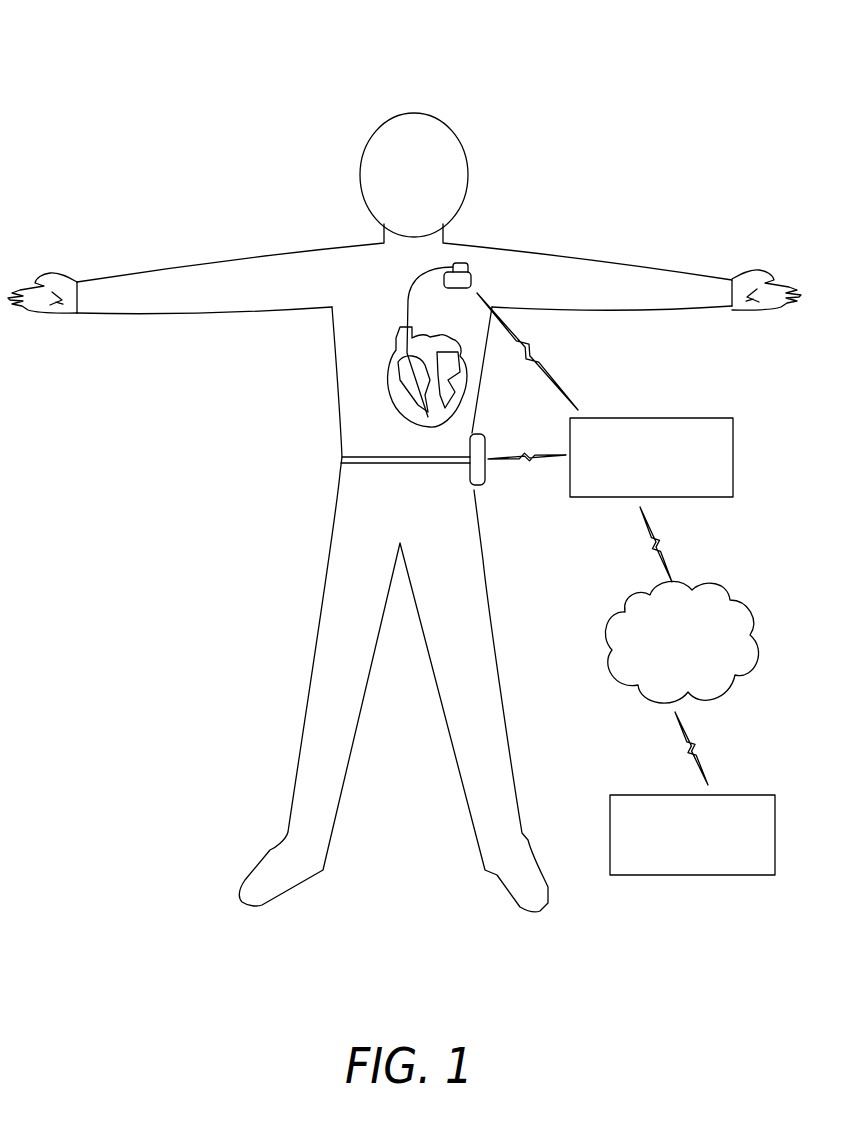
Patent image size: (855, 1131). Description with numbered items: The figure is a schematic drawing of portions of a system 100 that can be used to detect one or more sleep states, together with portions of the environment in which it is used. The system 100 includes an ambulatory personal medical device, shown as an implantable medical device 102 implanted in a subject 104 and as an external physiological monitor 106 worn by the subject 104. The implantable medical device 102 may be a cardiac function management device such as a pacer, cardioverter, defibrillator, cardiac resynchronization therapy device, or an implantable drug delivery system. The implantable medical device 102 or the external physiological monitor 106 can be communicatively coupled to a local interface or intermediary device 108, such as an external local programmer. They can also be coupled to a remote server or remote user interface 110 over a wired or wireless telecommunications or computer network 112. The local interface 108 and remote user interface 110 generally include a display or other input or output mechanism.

The system 100 is at (156, 56).
The implantable medical device 102 is at (472, 278).
The subject 104 is at (330, 346).
The external physiological monitor 106 is at (486, 475).
The local interface or intermediary device 108 is at (712, 418).
The remote user interface 110 is at (748, 795).
The network 112 is at (720, 588).